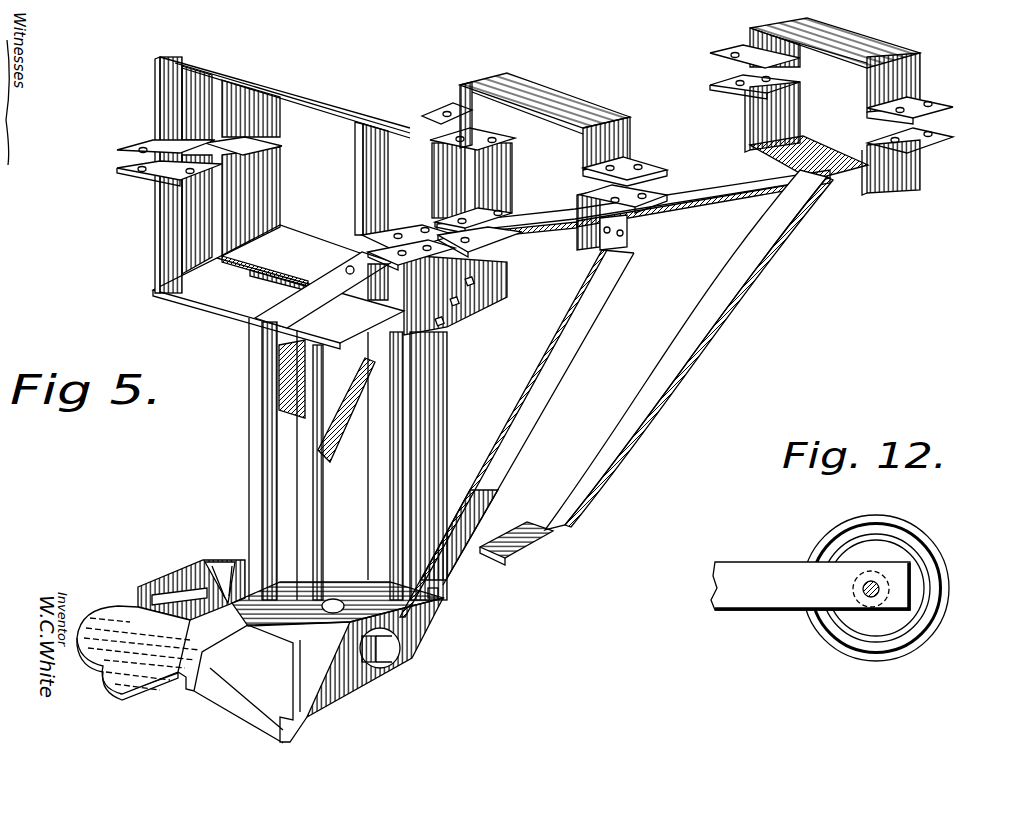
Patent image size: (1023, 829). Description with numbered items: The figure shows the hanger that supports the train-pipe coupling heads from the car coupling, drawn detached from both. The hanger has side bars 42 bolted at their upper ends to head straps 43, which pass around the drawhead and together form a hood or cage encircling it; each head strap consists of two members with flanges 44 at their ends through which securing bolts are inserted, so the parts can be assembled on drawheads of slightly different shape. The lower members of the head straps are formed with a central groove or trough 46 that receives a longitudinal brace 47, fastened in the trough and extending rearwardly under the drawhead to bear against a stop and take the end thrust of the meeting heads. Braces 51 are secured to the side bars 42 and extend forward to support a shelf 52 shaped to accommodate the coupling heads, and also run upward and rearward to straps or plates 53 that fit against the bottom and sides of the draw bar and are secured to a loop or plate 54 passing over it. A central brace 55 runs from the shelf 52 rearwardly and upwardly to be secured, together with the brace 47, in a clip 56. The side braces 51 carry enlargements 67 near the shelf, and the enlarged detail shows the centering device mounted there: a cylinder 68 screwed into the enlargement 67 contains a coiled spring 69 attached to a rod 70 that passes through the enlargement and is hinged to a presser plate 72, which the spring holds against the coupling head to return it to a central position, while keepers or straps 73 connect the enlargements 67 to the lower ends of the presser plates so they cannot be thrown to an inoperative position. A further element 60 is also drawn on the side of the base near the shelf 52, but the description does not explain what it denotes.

In FIG. 5, the side bars 42 is at (258, 357).
In FIG. 5, the head straps 43 is at (270, 196).
In FIG. 5, the flanges 44 is at (480, 217).
In FIG. 5, the groove or trough 46 is at (255, 313).
In FIG. 5, the longitudinal brace 47 is at (328, 281).
In FIG. 5, the braces 51 is at (546, 391).
In FIG. 5, the shelf 52 is at (337, 608).
In FIG. 5, the straps or plates 53 is at (622, 216).
In FIG. 5, the loop or plate 54 is at (592, 113).
In FIG. 5, the central brace 55 is at (775, 232).
In FIG. 5, the clip 56 is at (853, 183).
In FIG. 5, the roller 60 is at (382, 650).
In FIG. 5, the enlargements 67 is at (343, 680).
In FIG. 12, the cylinders 68 is at (902, 648).
In FIG. 12, the coiled springs 69 is at (893, 556).
In FIG. 12, the rod 70 is at (913, 595).
In FIG. 5, the presser plate 72 is at (220, 574).
In FIG. 5, the keepers or straps 73 is at (138, 653).
In FIG. 12, the keepers or straps 73 is at (810, 586).